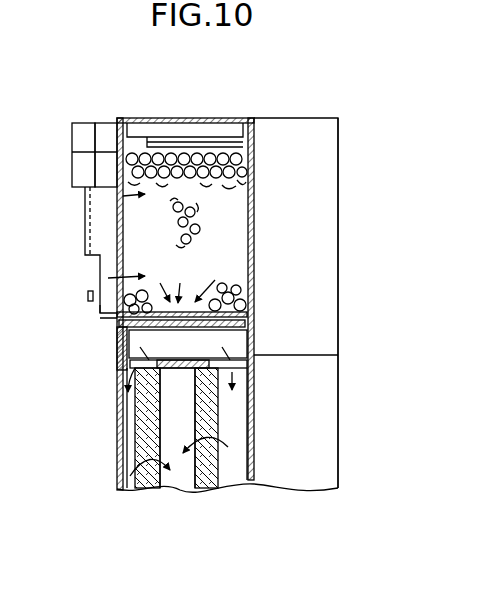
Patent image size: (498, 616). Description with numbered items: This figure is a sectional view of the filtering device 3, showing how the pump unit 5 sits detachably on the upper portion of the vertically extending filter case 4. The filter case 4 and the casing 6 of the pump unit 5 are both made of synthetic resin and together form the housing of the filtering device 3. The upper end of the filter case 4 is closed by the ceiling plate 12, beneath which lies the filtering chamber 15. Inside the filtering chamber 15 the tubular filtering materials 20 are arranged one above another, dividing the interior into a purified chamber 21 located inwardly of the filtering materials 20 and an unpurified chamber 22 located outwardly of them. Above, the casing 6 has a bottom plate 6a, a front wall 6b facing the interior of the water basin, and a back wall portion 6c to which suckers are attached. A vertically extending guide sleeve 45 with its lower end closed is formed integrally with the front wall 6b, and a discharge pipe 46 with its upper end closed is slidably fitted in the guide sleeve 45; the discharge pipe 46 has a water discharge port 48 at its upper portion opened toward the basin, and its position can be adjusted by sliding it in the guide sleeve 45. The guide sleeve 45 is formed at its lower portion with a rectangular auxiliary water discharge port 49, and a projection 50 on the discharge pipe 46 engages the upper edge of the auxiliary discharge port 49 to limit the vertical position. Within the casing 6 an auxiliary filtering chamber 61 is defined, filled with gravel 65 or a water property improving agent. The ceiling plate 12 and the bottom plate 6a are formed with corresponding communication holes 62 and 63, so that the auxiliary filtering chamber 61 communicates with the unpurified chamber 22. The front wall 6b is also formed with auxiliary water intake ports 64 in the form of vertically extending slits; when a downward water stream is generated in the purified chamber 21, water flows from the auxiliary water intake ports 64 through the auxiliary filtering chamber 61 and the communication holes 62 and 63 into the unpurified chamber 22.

The filtering device 3 is at (377, 310).
The filter case 4 is at (340, 402).
The pump unit 5 is at (343, 302).
The casing 6 is at (218, 118).
The bottom plate 6a is at (250, 335).
The front wall 6b is at (117, 153).
The back wall portion 6c is at (327, 192).
The ceiling plate 12 is at (118, 350).
The filtering chamber 15 is at (241, 407).
The tubular filtering material 20 is at (142, 430).
The purified chamber 21 is at (179, 480).
The unpurified chamber 22 is at (240, 448).
The guide sleeve 45 is at (85, 231).
The discharge pipe 46 is at (107, 130).
The water discharge port 48 is at (75, 135).
The auxiliary water discharge port 49 is at (100, 306).
The projection 50 is at (88, 295).
The auxiliary filtering chamber 61 is at (240, 240).
The communication holes 62 is at (182, 330).
The communication holes 63 is at (195, 310).
The auxiliary water intake ports 64 is at (118, 213).
The gravel 65 is at (238, 171).